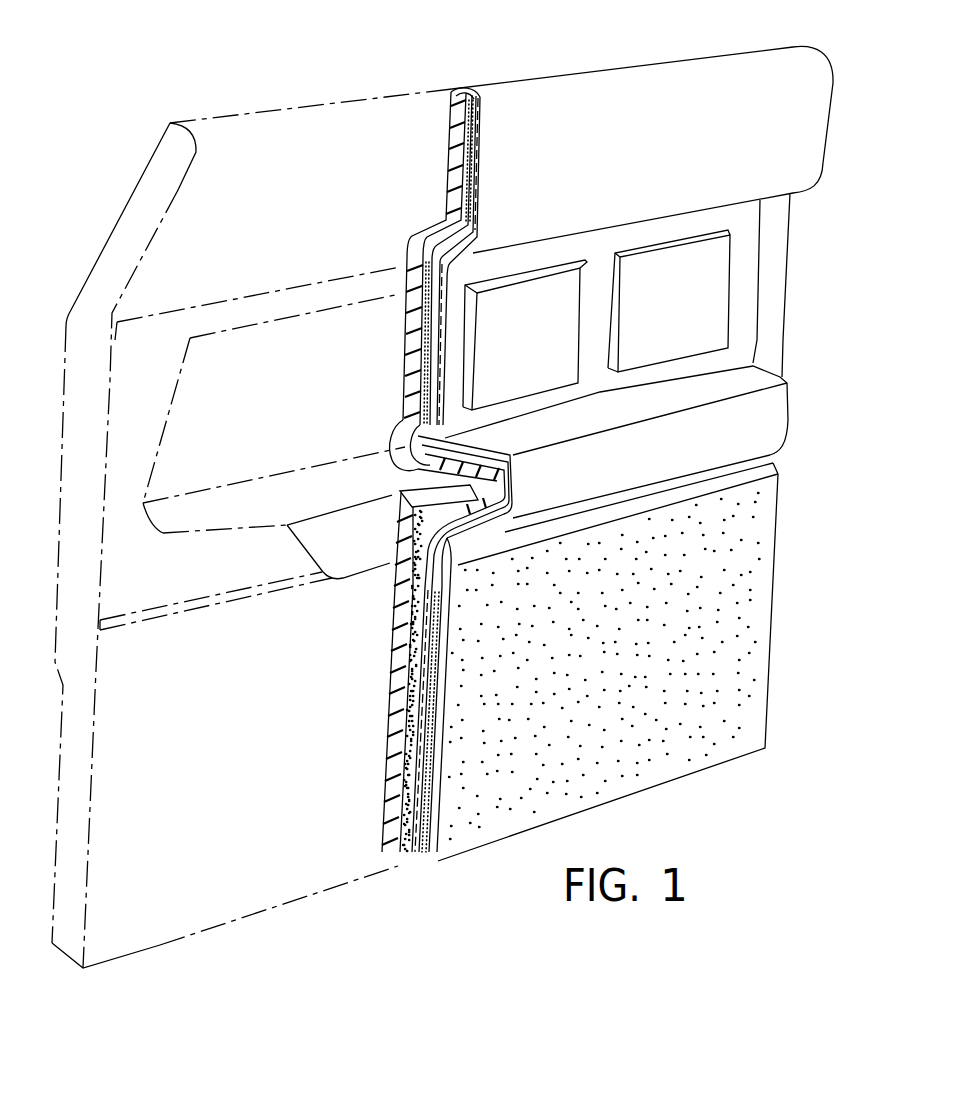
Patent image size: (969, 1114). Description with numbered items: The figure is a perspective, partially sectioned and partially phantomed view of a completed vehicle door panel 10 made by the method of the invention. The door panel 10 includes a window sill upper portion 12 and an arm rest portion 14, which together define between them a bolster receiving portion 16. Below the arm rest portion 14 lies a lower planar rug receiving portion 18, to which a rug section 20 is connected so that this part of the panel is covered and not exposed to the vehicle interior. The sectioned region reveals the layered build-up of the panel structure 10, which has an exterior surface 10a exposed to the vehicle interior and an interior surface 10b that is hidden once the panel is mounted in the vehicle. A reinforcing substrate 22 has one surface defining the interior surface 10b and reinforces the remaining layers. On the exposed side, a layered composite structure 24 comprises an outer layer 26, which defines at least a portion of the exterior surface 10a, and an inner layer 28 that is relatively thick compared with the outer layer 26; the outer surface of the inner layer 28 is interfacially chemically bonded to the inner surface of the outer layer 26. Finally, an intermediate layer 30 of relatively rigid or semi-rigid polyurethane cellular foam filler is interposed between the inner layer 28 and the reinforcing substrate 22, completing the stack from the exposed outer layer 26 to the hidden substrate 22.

The vehicle door panel 10 is at (270, 100).
The exterior surface 10a is at (628, 170).
The interior surface 10b is at (448, 150).
The window sill upper portion 12 is at (811, 126).
The arm rest portion 14 is at (772, 410).
The bolster receiving portion 16 is at (770, 306).
The lower planar rug receiving portion 18 is at (774, 463).
The rug section 20 is at (758, 595).
The reinforcing substrate 22 is at (383, 849).
The layered composite structure 24 is at (453, 87).
The outer layer 26 is at (434, 866).
The inner layer 28 is at (407, 865).
The intermediate layer 30 is at (399, 862).